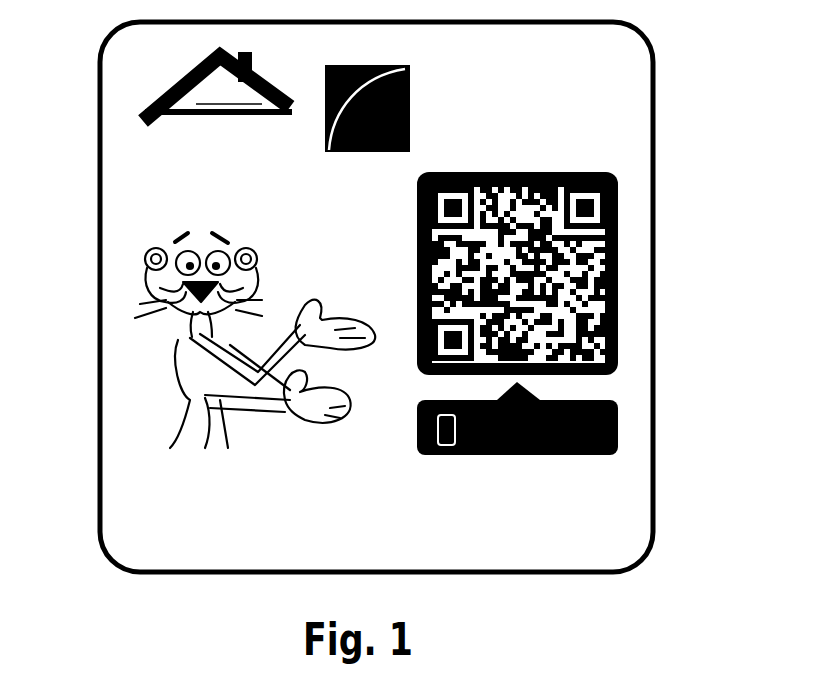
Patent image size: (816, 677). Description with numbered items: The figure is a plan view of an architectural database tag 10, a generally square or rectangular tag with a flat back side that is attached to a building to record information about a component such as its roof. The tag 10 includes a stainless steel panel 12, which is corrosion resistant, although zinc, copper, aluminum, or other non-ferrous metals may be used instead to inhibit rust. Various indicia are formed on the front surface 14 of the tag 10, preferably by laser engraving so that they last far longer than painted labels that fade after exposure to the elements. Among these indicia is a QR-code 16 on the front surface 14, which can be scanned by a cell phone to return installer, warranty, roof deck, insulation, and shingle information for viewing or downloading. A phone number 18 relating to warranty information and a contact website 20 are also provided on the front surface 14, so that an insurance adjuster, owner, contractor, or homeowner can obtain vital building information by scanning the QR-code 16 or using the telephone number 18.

The architectural database tag 10 is at (384, 320).
The stainless steel panel 12 is at (100, 368).
The front surface 14 is at (112, 193).
The QR-code 16 is at (590, 245).
The phone number 18 is at (624, 488).
The contact website 20 is at (280, 550).